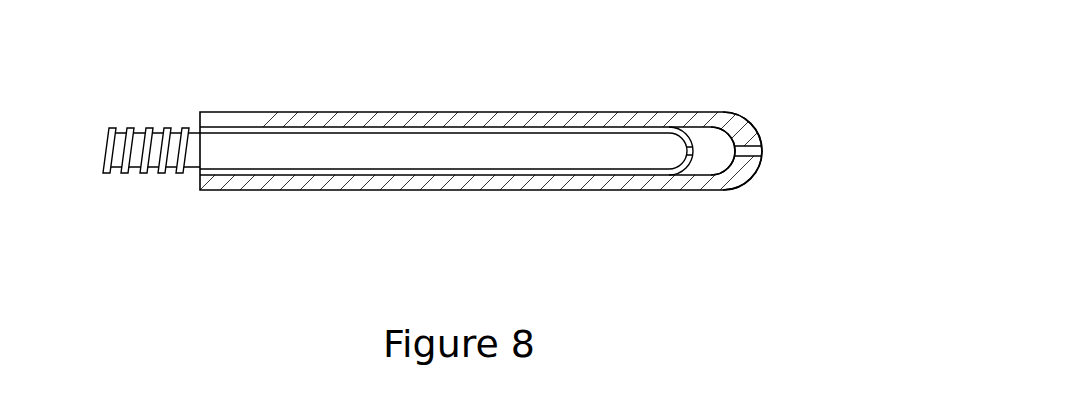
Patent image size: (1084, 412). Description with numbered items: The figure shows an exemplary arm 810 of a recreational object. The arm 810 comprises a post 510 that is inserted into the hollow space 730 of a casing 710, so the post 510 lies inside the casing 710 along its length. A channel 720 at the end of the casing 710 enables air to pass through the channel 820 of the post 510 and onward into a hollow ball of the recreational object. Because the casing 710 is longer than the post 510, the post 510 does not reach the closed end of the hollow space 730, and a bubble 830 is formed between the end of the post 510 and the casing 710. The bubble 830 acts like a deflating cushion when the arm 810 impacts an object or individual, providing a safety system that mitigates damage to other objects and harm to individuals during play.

The post 510 is at (198, 150).
The casing 710 is at (437, 190).
The channel 720 is at (765, 150).
The hollow space 730 is at (702, 175).
The arm 810 is at (368, 100).
The channel 820 is at (680, 143).
The bubble 830 is at (712, 147).